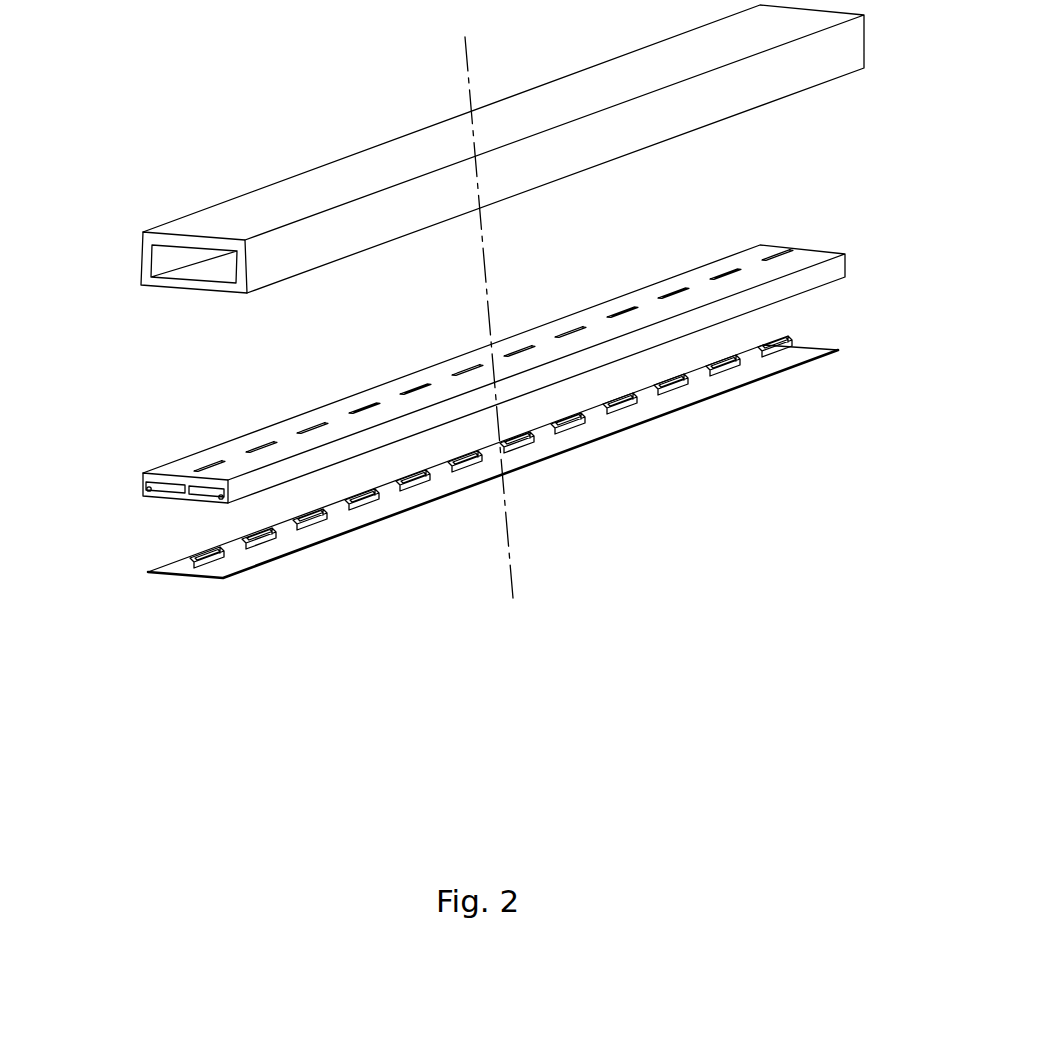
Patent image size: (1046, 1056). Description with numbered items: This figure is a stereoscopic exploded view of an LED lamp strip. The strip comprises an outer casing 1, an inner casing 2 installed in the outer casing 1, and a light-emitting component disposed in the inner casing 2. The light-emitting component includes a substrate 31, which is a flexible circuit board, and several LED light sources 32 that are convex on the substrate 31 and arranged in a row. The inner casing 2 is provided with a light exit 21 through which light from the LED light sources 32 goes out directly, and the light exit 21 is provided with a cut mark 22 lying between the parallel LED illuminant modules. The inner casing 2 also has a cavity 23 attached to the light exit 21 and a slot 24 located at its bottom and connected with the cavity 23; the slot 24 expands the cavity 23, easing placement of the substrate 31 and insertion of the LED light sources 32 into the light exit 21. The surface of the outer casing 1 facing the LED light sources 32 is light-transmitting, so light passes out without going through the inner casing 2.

The outer casing 1 is at (417, 142).
The inner casing 2 is at (802, 250).
The light exit 21 is at (205, 470).
The cut mark 22 is at (548, 345).
The cavity 23 is at (153, 485).
The slot 24 is at (183, 495).
The substrate 31 is at (350, 532).
The LED light source 32 is at (220, 558).